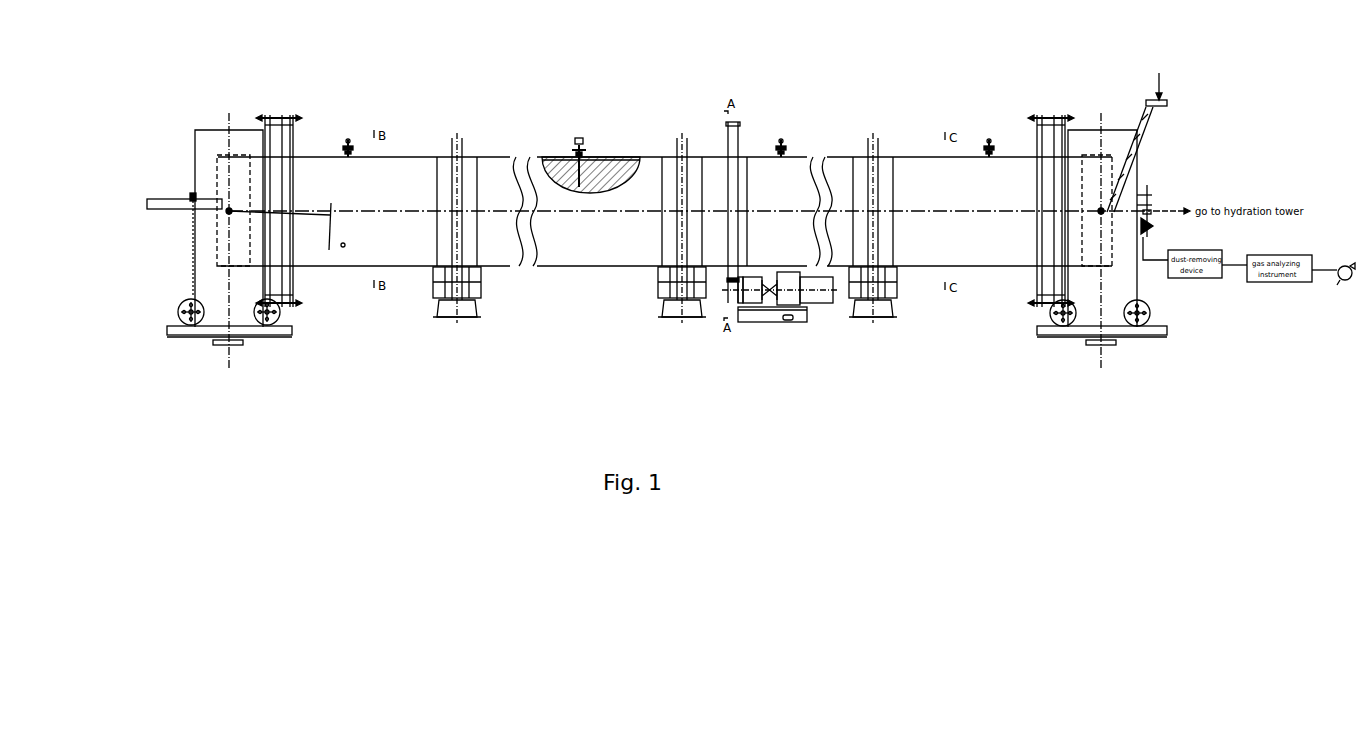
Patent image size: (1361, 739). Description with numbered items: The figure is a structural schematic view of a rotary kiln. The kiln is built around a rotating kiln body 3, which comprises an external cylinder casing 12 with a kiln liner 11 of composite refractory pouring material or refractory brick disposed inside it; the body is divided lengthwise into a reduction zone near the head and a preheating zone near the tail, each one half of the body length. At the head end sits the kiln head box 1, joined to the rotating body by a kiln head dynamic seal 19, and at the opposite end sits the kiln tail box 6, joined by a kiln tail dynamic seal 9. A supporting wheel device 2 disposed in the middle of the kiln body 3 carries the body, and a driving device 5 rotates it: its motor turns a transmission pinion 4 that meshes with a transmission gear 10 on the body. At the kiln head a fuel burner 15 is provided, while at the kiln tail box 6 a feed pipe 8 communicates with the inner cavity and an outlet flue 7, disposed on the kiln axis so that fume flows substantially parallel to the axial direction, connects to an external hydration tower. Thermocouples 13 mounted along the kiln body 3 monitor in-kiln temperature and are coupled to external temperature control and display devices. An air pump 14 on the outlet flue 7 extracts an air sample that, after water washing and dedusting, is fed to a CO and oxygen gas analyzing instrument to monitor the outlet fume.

The kiln head box 1 is at (277, 300).
The supporting wheel device 2 is at (462, 307).
The kiln body 3 is at (567, 235).
The transmission pinion 4 is at (731, 300).
The driving device 5 is at (795, 307).
The kiln tail box 6 is at (1085, 313).
The outlet flue 7 is at (1150, 207).
The feed pipe 8 is at (1143, 127).
The kiln tail dynamic seal 9 is at (1048, 130).
The transmission gear 10 is at (733, 163).
The kiln liner 11 is at (625, 165).
The cylinder casing 12 is at (600, 158).
The thermocouples 13 is at (577, 157).
The air pump 14 is at (1340, 283).
The fuel burner 15 is at (180, 200).
The kiln head dynamic seal 19 is at (277, 152).